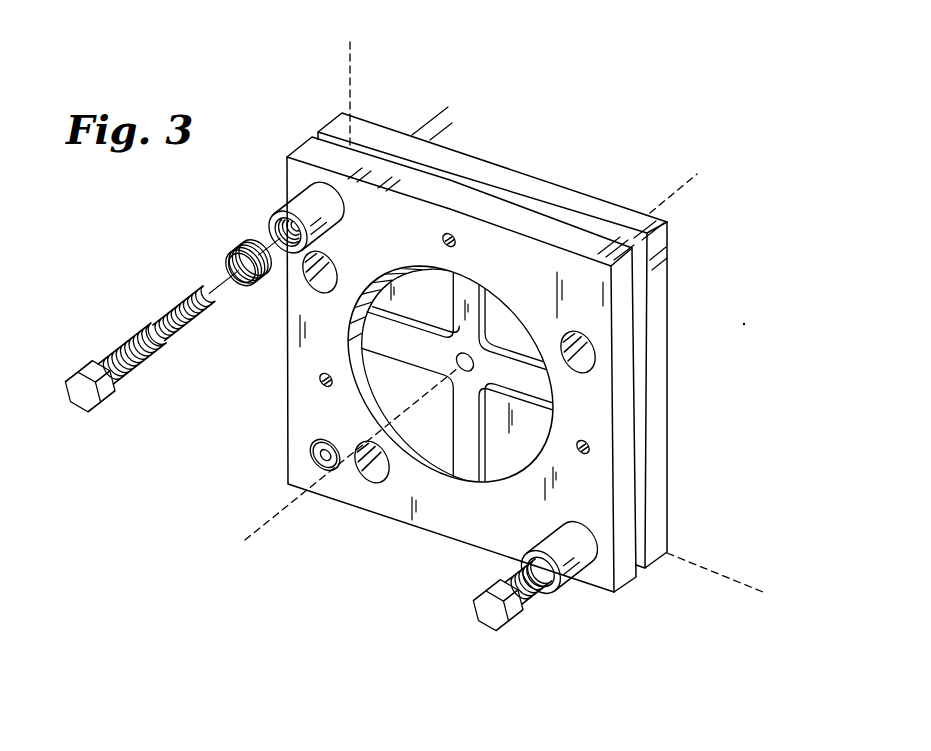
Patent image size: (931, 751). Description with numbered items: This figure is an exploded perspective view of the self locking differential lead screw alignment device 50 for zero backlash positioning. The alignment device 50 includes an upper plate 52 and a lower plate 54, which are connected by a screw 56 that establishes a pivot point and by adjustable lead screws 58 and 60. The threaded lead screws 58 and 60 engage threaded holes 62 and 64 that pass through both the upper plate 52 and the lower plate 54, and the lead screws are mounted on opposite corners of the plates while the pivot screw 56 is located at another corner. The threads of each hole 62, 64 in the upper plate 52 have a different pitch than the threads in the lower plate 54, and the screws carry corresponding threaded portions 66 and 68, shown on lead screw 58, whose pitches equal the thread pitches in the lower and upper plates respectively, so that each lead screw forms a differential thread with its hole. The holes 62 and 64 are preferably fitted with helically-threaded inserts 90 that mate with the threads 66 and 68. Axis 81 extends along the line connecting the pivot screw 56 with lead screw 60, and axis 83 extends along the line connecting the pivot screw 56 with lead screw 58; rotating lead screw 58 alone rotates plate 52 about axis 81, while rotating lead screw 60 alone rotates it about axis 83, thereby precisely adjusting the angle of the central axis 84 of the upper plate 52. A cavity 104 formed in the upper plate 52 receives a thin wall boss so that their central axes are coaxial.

The alignment device 50 is at (561, 141).
The upper plate 52 is at (445, 517).
The lower plate 54 is at (657, 378).
The screw 56 is at (310, 457).
The lead screw 58 is at (82, 402).
The lead screw 60 is at (485, 615).
The threaded hole 62 is at (268, 230).
The threaded hole 64 is at (580, 577).
The threaded portion 66 is at (127, 347).
The threaded portion 68 is at (183, 302).
The axis 81 is at (750, 585).
The axis 83 is at (352, 68).
The central axis 84 is at (262, 527).
The helically-threaded insert 90 is at (242, 250).
The cavity 104 is at (393, 364).